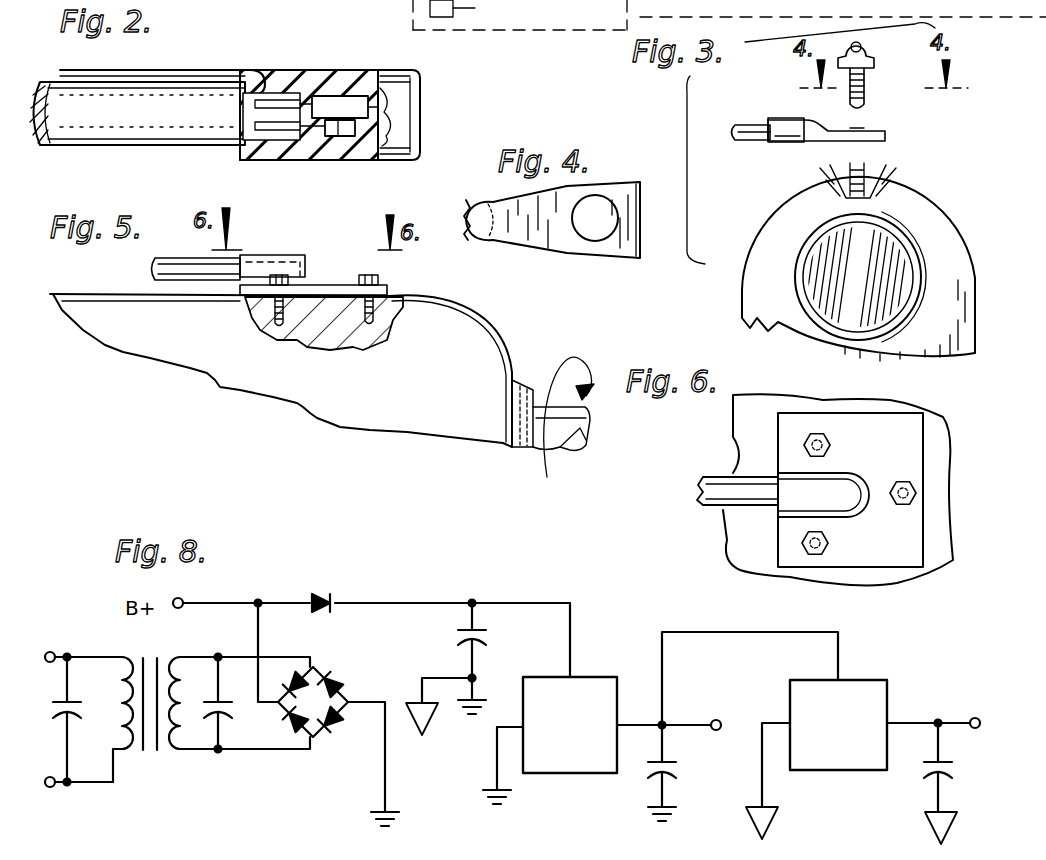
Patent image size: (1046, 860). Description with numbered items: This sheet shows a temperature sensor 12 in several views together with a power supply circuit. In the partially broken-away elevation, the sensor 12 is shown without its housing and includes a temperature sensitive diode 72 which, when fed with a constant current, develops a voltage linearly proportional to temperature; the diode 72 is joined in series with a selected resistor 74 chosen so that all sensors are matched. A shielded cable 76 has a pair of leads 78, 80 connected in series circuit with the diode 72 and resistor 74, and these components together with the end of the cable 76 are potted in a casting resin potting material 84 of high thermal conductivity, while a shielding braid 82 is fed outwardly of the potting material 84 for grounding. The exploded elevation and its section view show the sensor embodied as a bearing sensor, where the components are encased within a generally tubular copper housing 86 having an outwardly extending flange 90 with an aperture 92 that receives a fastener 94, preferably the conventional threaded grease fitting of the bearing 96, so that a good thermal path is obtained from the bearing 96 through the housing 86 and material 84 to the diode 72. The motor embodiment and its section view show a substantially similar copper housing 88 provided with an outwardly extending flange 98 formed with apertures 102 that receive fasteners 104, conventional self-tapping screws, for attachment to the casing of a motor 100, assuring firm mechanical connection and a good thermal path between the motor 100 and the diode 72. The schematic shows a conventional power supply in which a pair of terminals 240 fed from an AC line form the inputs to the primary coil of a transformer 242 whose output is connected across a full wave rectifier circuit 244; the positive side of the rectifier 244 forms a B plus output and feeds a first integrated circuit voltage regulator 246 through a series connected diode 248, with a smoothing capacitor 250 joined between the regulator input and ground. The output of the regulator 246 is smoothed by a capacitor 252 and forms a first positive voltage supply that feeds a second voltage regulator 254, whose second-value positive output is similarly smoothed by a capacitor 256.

In FIG. 2, the sensor 12 is at (218, 68).
In FIG. 2, the temperature sensitive diode 72 is at (345, 136).
In FIG. 2, the resistor 74 is at (330, 100).
In FIG. 2, the shielded cable 76 is at (183, 120).
In FIG. 3, the shielded cable 76 is at (745, 125).
In FIG. 5, the shielded cable 76 is at (153, 266).
In FIG. 2, the lead 78 is at (285, 95).
In FIG. 2, the lead 80 is at (280, 150).
In FIG. 2, the shielding braid 82 is at (125, 72).
In FIG. 2, the potting material 84 is at (357, 72).
In FIG. 3, the potting material 84 is at (780, 140).
In FIG. 5, the potting material 84 is at (296, 262).
In FIG. 3, the housing 86 is at (782, 118).
In FIG. 4, the housing 86 is at (497, 178).
In FIG. 5, the housing 88 is at (285, 255).
In FIG. 6, the housing 88 is at (788, 489).
In FIG. 3, the flange 90 is at (888, 136).
In FIG. 4, the flange 90 is at (635, 190).
In FIG. 3, the aperture 92 is at (862, 130).
In FIG. 4, the aperture 92 is at (590, 205).
In FIG. 3, the fastener 94 is at (866, 90).
In FIG. 3, the bearing 96 is at (772, 232).
In FIG. 5, the flange 98 is at (330, 290).
In FIG. 6, the flange 98 is at (786, 420).
In FIG. 5, the motor 100 is at (492, 332).
In FIG. 5, the aperture 102 is at (253, 320).
In FIG. 6, the aperture 102 is at (895, 507).
In FIG. 5, the fastener 104 is at (383, 282).
In FIG. 6, the fastener 104 is at (902, 480).
In FIG. 8, the terminals 240 is at (73, 626).
In FIG. 8, the transformer 242 is at (211, 734).
In FIG. 8, the full wave rectifier circuit 244 is at (332, 752).
In FIG. 8, the voltage regulator 246 is at (590, 743).
In FIG. 8, the diode 248 is at (325, 587).
In FIG. 8, the smoothing capacitor 250 is at (502, 658).
In FIG. 8, the smoothing capacitor 252 is at (692, 773).
In FIG. 8, the voltage regulator 254 is at (862, 743).
In FIG. 8, the smoothing capacitor 256 is at (930, 778).